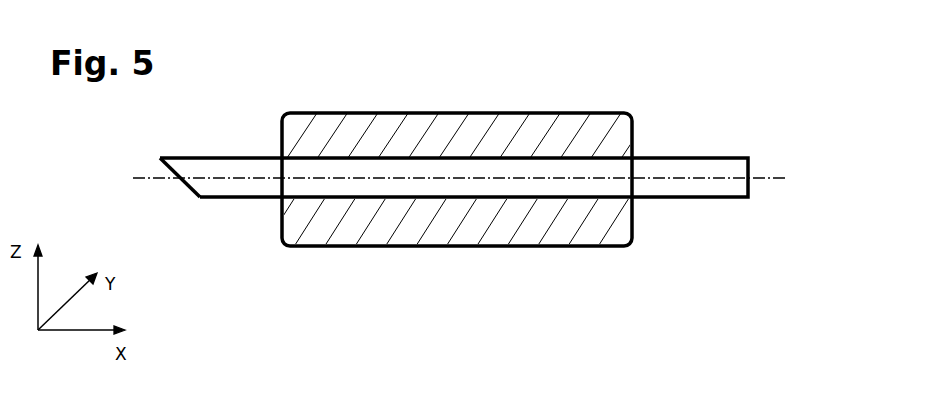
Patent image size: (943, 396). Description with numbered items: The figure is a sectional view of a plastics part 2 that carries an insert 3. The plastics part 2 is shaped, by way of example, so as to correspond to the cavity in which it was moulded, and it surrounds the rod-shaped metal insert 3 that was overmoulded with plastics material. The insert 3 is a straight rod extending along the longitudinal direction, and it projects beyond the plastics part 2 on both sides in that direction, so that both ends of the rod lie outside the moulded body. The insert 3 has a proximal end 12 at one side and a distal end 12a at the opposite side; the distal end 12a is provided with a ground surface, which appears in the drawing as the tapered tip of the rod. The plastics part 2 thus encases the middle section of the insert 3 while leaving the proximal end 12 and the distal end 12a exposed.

The plastics part 2 is at (357, 124).
The insert 3 is at (697, 168).
The proximal end 12 is at (458, 161).
The distal end 12a is at (185, 187).